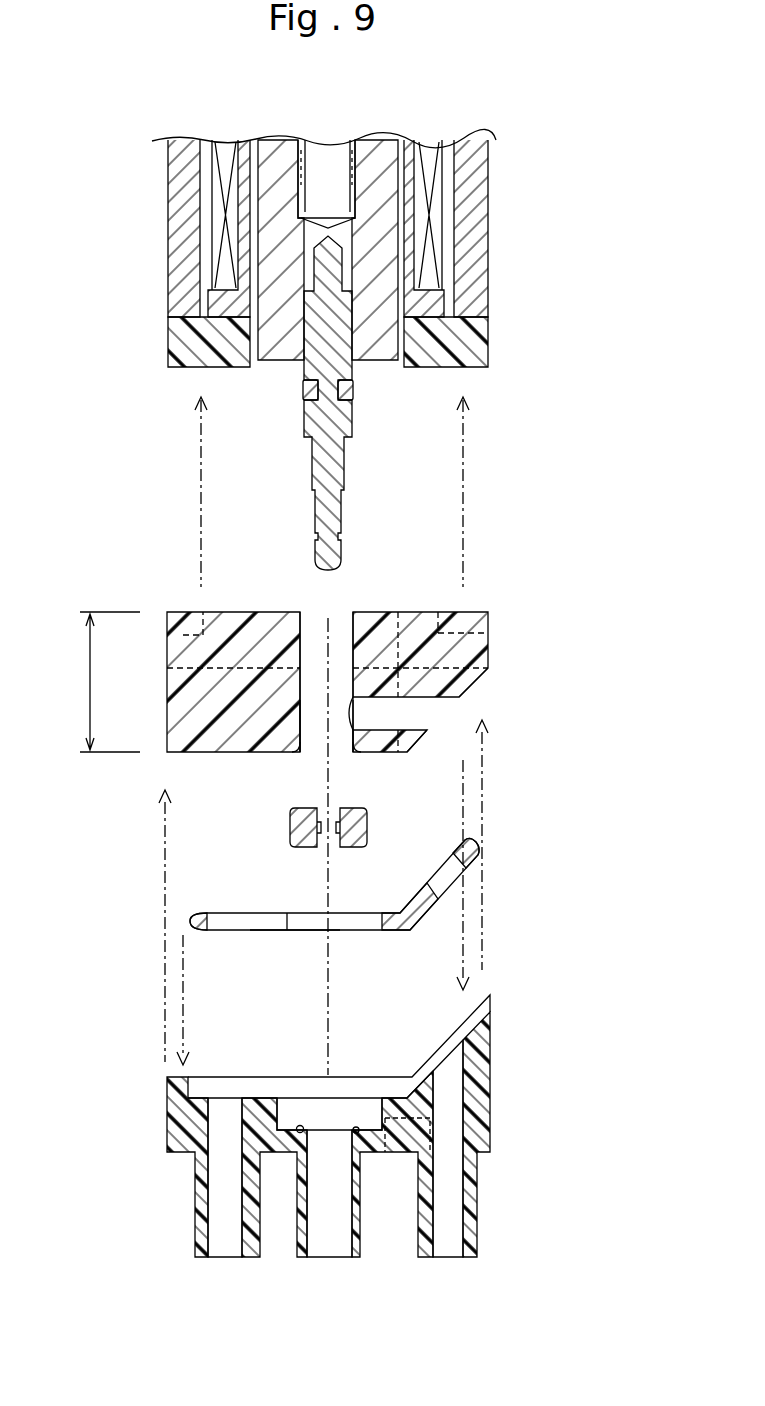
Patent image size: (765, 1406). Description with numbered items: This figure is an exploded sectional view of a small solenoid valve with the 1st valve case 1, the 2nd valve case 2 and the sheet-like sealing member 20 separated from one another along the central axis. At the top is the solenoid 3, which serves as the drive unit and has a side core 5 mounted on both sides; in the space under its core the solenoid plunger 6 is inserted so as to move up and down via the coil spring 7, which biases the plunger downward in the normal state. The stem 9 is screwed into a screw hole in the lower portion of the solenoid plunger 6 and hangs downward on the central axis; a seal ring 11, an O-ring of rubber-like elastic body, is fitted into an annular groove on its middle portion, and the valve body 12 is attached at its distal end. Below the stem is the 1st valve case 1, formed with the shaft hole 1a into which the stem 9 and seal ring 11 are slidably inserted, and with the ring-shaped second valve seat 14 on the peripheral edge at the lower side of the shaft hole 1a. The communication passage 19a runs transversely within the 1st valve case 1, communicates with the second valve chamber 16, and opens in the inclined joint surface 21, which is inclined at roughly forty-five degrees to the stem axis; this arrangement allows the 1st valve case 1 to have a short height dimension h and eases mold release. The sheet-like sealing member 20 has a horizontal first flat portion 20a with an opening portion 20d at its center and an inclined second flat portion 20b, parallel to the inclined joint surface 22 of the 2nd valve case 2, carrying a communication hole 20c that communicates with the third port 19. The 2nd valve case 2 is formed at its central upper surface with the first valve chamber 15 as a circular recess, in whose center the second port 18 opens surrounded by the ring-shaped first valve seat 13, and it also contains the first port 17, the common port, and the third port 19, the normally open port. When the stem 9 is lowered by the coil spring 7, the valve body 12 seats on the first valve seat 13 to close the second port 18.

The 1st valve case 1 is at (177, 589).
The shaft hole 1a is at (300, 690).
The 2nd valve case 2 is at (152, 1126).
The solenoid 3 is at (200, 228).
The side core 5 is at (177, 185).
The solenoid plunger 6 is at (268, 337).
The coil spring 7 is at (298, 162).
The stem 9 is at (371, 444).
The seal ring 11 is at (300, 393).
The valve body 12 is at (290, 818).
The first valve seat 13 is at (354, 1127).
The second valve seat 14 is at (290, 750).
The first valve chamber 15 is at (295, 1112).
The second valve chamber 16 is at (326, 742).
The first port 17 is at (225, 1197).
The second port 18 is at (325, 1208).
The third port 19 is at (448, 1200).
The communication passage 19a is at (437, 672).
The sheet-like sealing member 20 is at (190, 913).
The first flat portion 20a is at (265, 910).
The second flat portion 20b is at (470, 836).
The communication hole 20c is at (447, 878).
The opening portion 20d is at (295, 931).
The inclined joint surface 21 is at (472, 687).
The inclined joint surface 22 is at (468, 1018).
The height dimension h is at (106, 682).